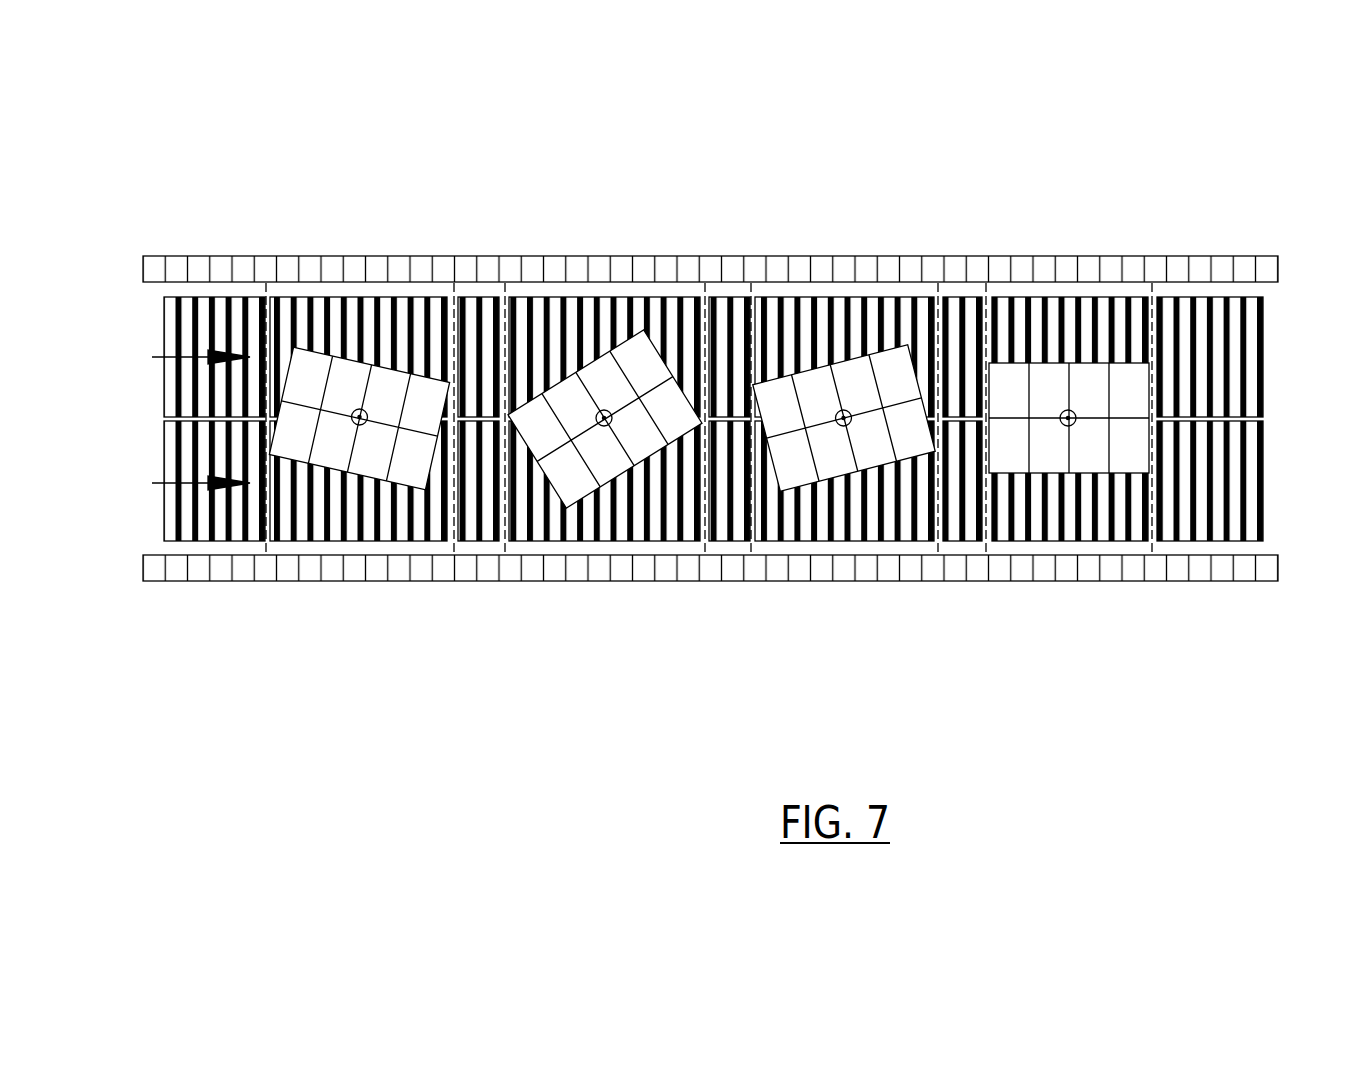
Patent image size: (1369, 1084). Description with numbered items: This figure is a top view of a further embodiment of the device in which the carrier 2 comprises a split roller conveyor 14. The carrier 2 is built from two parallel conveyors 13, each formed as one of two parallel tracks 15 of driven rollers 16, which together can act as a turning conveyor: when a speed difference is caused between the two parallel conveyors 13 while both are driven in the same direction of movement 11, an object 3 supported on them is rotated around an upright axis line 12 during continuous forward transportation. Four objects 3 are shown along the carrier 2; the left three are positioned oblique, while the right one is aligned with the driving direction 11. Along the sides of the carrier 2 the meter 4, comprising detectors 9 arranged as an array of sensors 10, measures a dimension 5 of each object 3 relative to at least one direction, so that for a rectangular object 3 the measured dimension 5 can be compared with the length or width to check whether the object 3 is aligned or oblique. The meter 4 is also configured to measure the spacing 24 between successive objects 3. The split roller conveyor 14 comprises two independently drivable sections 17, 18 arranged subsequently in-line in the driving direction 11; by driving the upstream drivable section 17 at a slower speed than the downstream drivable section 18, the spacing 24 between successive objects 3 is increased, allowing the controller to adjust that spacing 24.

The carrier 2 is at (702, 496).
The object 3 is at (355, 375).
The meter 4 is at (658, 427).
The dimension 5 is at (447, 666).
The detector 9 is at (395, 262).
The array of sensors 10 is at (242, 583).
The direction of movement 11 is at (183, 352).
The upright axis line 12 is at (366, 423).
The parallel conveyors 13 is at (95, 327).
The split roller conveyor 14 is at (1303, 357).
The parallel tracks 15 is at (103, 516).
The driven rollers 16 is at (243, 302).
The upstream drivable section 17 is at (175, 730).
The downstream drivable section 18 is at (1275, 730).
The spacing 24 is at (453, 666).